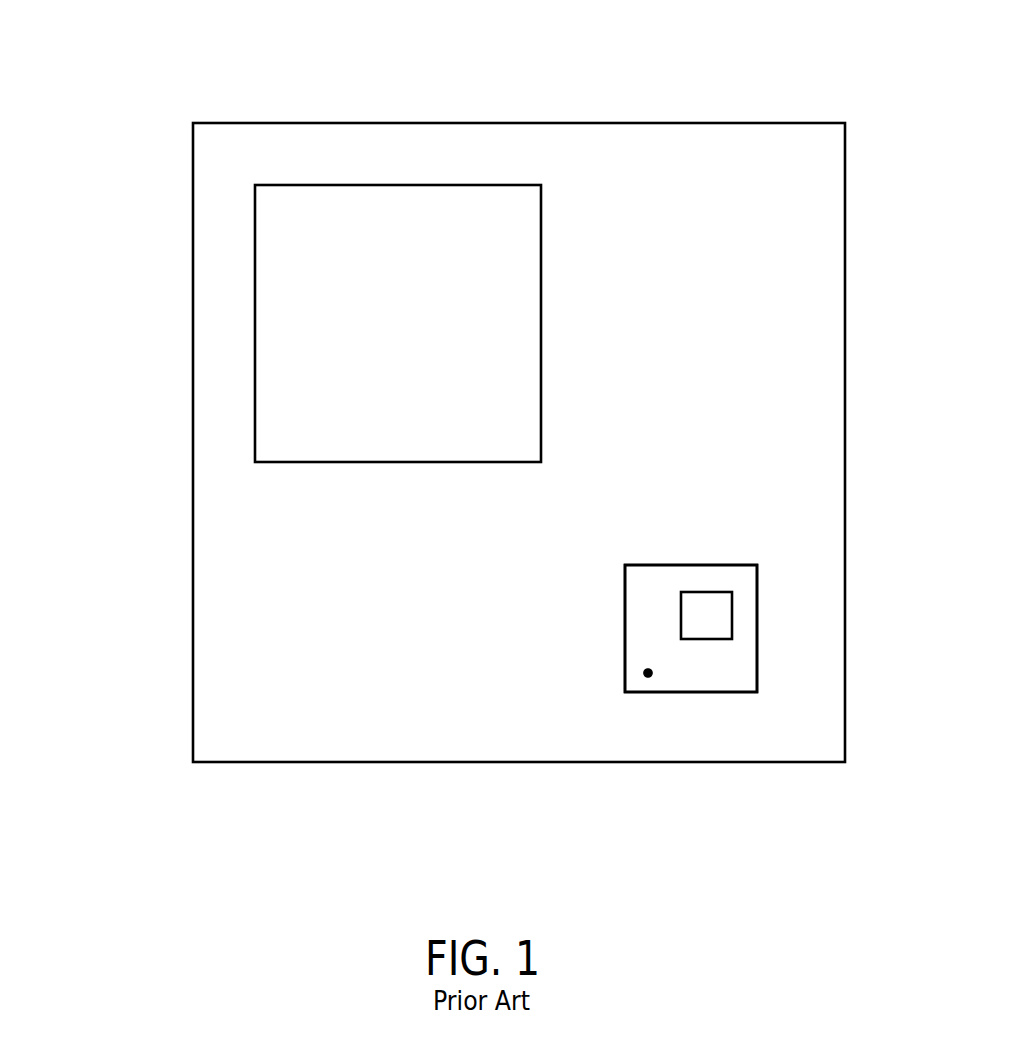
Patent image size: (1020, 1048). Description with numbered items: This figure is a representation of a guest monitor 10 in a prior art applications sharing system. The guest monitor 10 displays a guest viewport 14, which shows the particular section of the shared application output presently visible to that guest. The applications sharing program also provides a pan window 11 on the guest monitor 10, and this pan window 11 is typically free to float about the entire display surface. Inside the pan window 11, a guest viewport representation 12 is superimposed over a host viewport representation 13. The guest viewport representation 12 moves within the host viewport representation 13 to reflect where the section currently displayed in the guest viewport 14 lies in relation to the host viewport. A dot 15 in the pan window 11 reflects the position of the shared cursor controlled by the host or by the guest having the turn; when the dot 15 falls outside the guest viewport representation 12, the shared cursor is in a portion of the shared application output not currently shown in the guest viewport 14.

The guest monitor 10 is at (650, 57).
The pan window 11 is at (780, 611).
The guest viewport representation 12 is at (695, 611).
The host viewport representation 13 is at (625, 633).
The guest viewport 14 is at (255, 281).
The dot 15 is at (647, 679).